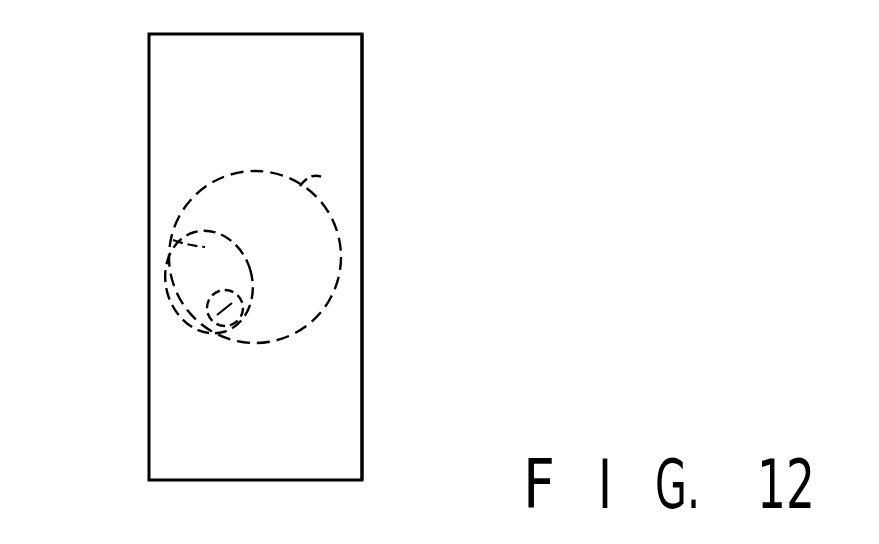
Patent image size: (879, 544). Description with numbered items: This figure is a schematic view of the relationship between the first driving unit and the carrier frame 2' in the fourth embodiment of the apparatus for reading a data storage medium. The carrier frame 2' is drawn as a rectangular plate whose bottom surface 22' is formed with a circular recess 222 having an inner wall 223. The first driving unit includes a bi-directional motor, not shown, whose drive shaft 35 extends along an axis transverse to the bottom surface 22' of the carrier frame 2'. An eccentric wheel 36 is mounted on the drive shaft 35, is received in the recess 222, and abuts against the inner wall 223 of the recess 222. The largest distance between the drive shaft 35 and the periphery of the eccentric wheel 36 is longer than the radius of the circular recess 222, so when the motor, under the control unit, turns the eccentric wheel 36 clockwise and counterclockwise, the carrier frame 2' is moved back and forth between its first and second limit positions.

The carrier frame 2' is at (298, 257).
The bottom surface 22' is at (388, 257).
The circular recess 222 is at (320, 273).
The inner wall 223 is at (322, 177).
The eccentric wheel 36 is at (173, 229).
The drive shaft 35 is at (208, 326).